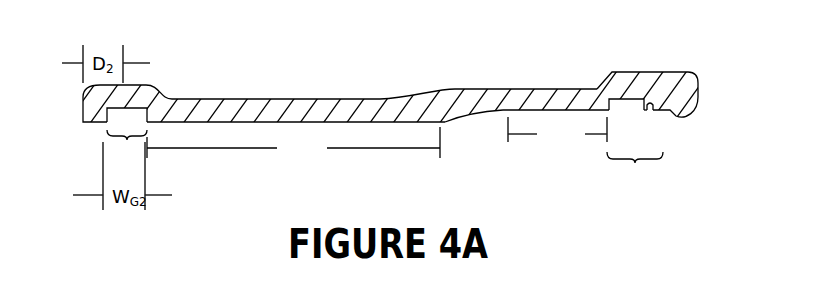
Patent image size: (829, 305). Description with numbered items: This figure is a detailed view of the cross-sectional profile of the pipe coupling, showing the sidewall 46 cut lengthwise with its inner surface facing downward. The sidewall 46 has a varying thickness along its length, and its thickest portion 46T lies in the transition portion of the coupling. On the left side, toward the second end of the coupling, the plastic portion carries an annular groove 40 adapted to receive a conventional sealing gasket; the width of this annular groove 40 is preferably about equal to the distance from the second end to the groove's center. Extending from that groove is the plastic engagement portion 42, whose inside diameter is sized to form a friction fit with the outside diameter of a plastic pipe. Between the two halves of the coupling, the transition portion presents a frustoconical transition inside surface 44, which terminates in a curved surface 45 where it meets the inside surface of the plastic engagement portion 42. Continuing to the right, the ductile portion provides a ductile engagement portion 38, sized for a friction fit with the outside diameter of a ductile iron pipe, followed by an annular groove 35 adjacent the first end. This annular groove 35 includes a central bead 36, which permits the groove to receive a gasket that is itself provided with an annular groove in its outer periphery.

The sidewall 46 is at (256, 110).
The thickest portion of the sidewall 46T is at (453, 84).
The plastic engagement portion 42 is at (293, 143).
The annular groove 40 is at (127, 140).
The curved surface 45 is at (454, 128).
The frustoconical transition inside surface 44 is at (476, 121).
The ductile engagement portion 38 is at (557, 131).
The annular groove 35 is at (635, 146).
The central bead 36 is at (649, 118).